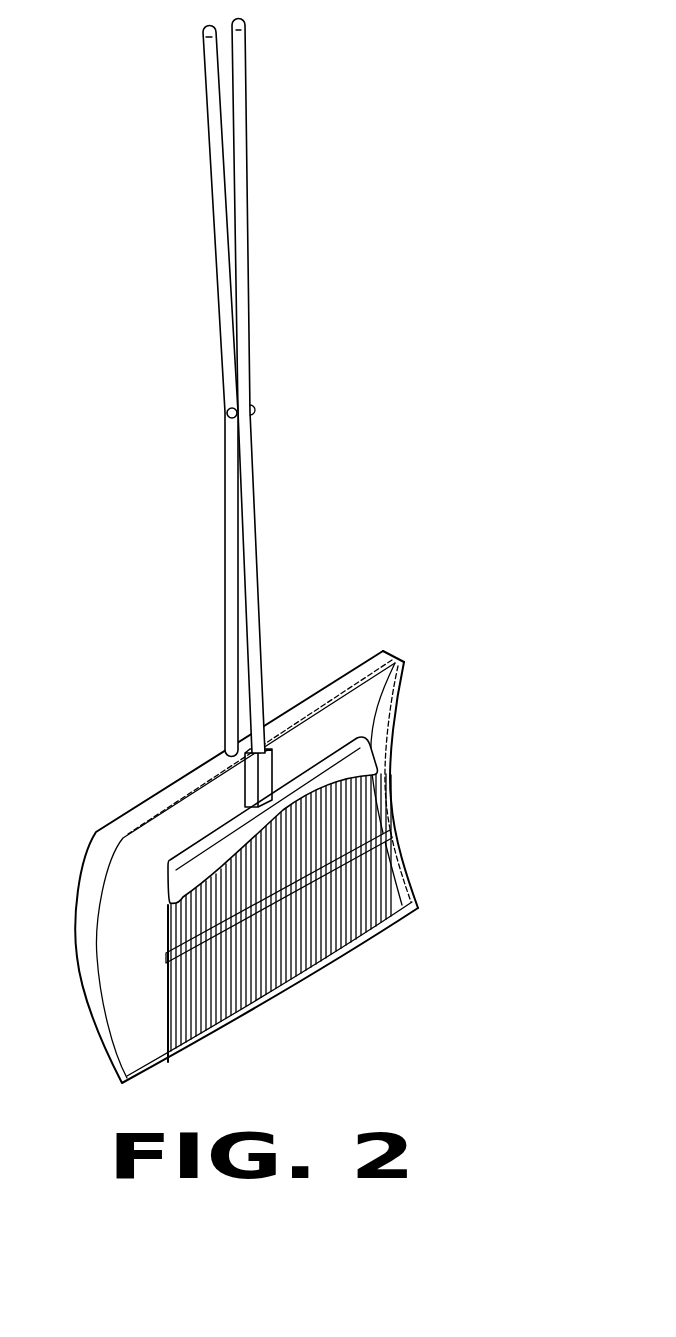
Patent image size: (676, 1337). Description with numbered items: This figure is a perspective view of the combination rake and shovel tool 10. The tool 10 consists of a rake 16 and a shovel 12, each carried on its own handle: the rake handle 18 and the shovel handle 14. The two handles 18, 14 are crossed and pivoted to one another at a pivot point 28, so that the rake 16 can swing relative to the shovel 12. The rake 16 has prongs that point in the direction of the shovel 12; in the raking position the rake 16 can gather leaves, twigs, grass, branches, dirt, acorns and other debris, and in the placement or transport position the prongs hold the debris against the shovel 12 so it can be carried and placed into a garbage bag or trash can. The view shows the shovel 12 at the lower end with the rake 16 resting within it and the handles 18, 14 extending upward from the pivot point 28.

The combination rake and shovel tool 10 is at (475, 153).
The shovel 12 is at (137, 813).
The handle 14 is at (239, 177).
The rake 16 is at (397, 846).
The handle 18 is at (221, 190).
The pivot point 28 is at (227, 411).